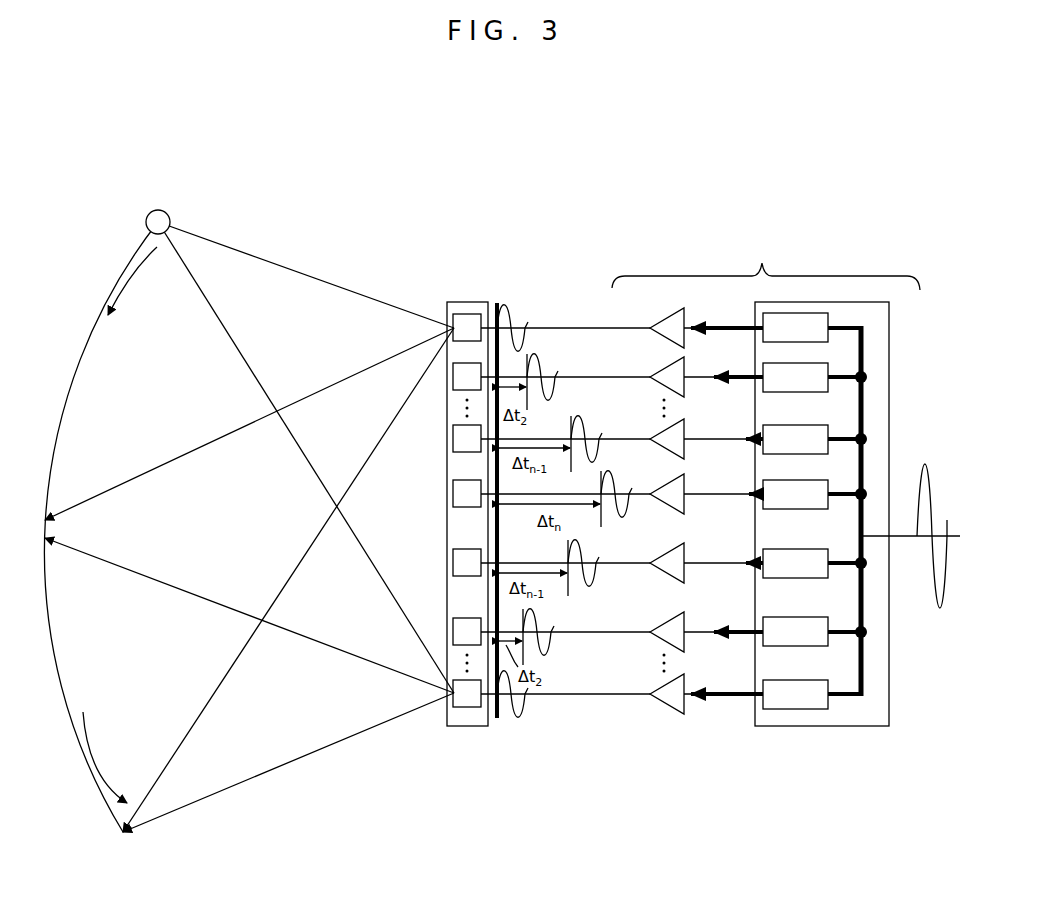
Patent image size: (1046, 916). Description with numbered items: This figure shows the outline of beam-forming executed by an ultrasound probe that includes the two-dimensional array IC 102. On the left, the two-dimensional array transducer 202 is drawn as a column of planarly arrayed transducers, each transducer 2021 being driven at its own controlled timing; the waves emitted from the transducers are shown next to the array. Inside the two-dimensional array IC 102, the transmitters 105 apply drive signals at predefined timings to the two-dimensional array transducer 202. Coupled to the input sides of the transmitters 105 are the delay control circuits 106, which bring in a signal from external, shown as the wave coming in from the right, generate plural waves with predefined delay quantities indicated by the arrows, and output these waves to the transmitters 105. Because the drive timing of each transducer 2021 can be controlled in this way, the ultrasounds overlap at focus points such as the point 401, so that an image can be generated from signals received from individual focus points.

The focal point / sound source 401 is at (166, 211).
The transducer 2021 is at (467, 325).
The 2-D array transducer 202 is at (474, 519).
The 2-D array IC 102 is at (786, 503).
The transmitter 105 is at (663, 706).
The delay control circuit 106 is at (793, 710).